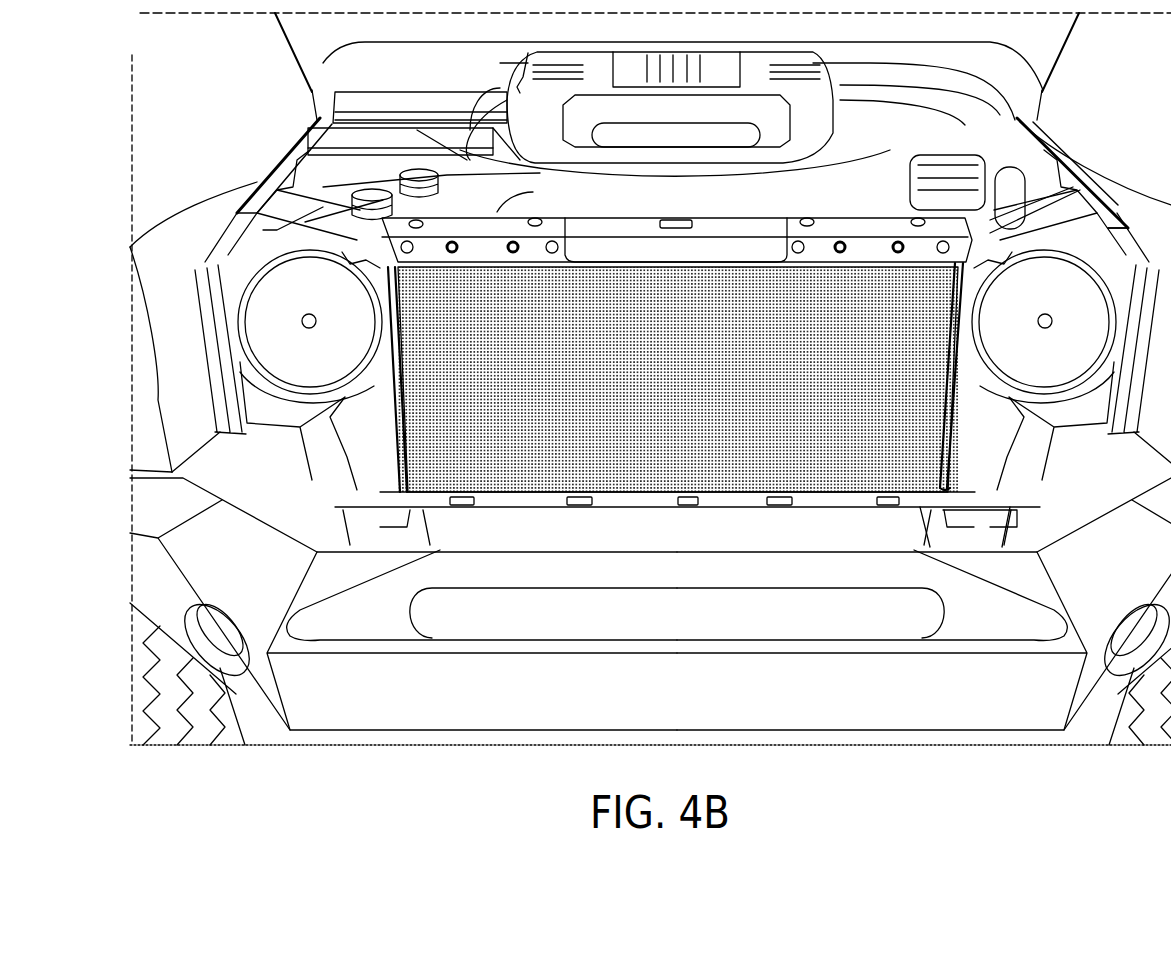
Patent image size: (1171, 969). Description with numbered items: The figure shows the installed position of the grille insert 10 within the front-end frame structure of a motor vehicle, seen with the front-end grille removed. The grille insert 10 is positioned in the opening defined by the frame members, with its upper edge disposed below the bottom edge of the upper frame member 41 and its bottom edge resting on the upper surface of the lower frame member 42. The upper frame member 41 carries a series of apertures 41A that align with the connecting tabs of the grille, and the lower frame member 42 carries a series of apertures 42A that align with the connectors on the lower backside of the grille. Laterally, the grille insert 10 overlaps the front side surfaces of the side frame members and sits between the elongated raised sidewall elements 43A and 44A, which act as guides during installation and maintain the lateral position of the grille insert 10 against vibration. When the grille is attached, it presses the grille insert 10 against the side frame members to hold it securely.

The grille insert 10 is at (681, 382).
The upper frame member 41 is at (643, 240).
The apertures 41A is at (420, 224).
The lower frame member 42 is at (524, 492).
The apertures 42A is at (888, 506).
The elongated raised sidewall element 43A is at (400, 386).
The elongated raised sidewall element 44A is at (950, 378).